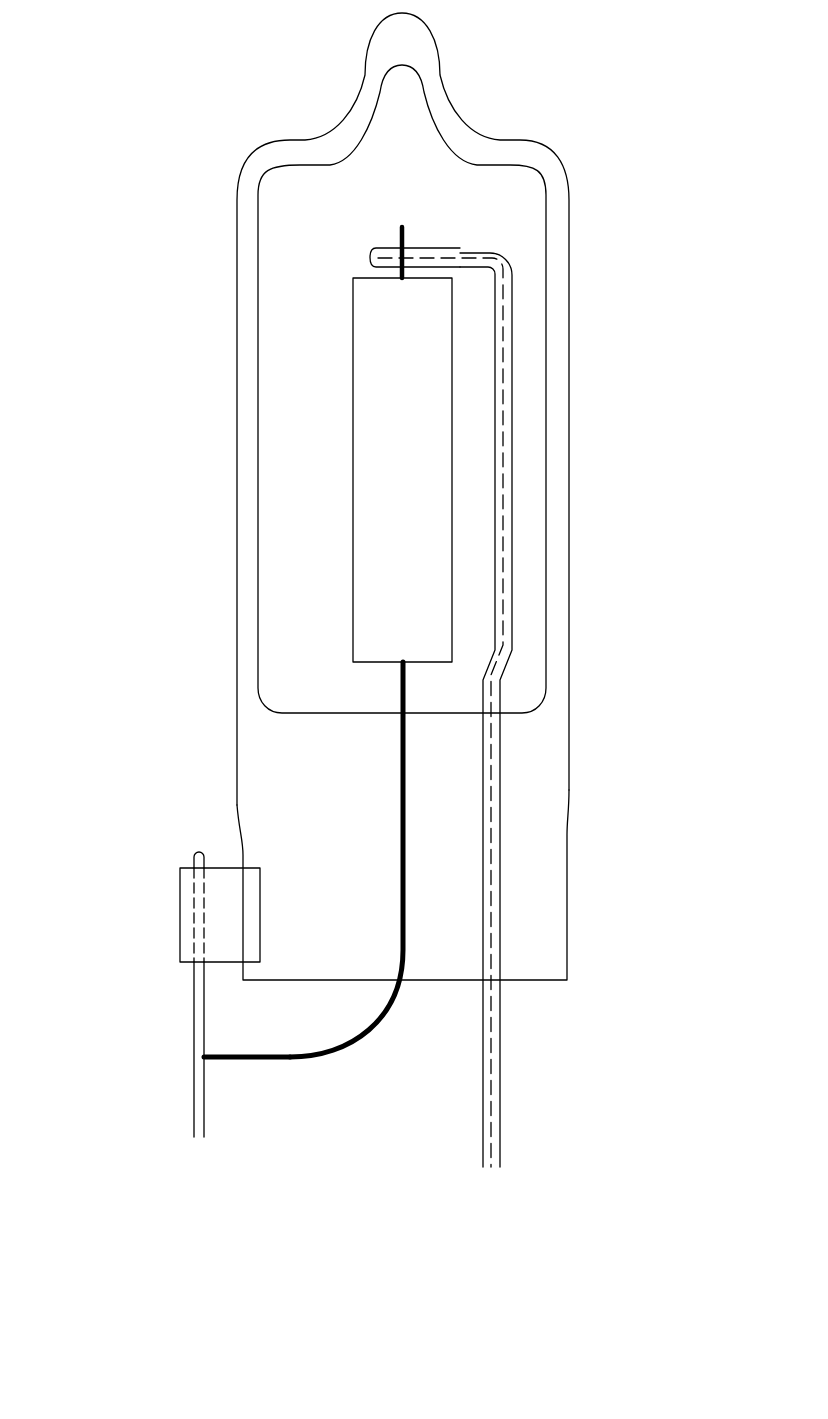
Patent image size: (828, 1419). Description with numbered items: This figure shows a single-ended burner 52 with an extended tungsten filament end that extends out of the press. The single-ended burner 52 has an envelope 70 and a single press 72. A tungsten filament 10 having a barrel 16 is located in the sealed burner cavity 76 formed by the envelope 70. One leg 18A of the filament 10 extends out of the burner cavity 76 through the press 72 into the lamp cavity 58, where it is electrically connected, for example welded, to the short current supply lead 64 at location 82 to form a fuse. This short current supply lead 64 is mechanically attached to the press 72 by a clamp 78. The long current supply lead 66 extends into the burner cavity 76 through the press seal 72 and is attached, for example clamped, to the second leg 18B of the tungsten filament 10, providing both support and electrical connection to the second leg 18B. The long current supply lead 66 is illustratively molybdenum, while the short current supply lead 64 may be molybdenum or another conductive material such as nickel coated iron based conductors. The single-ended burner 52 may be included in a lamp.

The lamp cavity 58 is at (168, 173).
The single-ended burner 52 is at (193, 517).
The envelope 70 is at (579, 235).
The press 72 is at (270, 823).
The burner cavity 76 is at (287, 377).
The tungsten filament 10 is at (466, 374).
The barrel 16 is at (427, 608).
The leg of the filament 18A is at (405, 803).
The second leg of the filament 18B is at (405, 233).
The long current supply lead 66 is at (500, 932).
The short current supply lead 64 is at (194, 1108).
The clamp 78 is at (180, 902).
The location of electrical connection 82 is at (218, 1041).